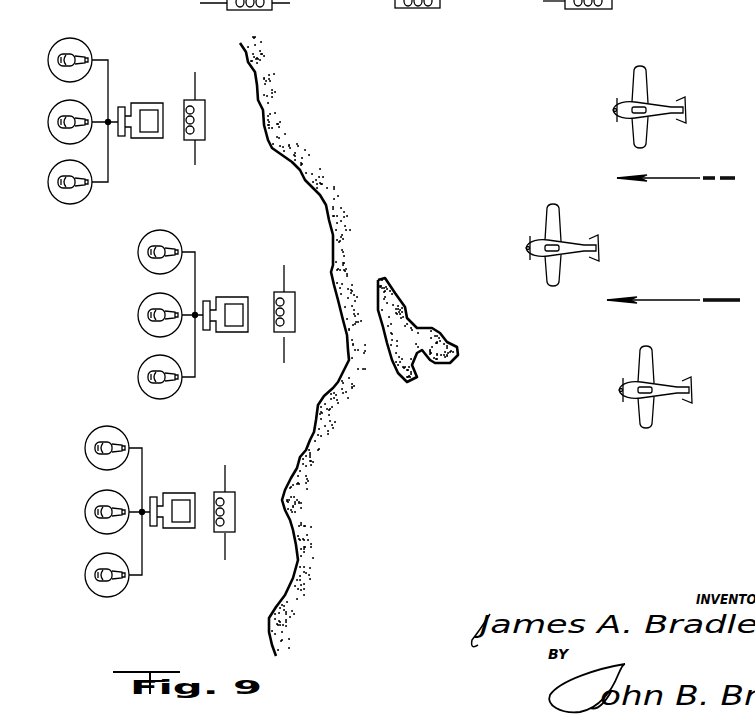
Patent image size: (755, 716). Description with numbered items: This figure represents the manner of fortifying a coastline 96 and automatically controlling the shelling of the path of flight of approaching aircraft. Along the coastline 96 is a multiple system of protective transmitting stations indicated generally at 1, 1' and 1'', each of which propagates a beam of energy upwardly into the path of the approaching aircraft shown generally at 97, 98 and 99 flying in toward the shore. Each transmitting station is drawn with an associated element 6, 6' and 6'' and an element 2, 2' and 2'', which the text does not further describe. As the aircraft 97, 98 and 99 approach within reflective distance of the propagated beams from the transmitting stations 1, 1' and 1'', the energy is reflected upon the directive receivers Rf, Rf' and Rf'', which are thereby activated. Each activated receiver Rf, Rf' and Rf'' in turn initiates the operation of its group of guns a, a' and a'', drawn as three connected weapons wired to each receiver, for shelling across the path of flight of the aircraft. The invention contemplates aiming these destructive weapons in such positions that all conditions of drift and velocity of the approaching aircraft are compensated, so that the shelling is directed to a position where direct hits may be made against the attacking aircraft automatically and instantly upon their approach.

The coastline 96 is at (313, 214).
The aircraft 97 is at (655, 90).
The aircraft 98 is at (573, 240).
The aircraft 99 is at (663, 373).
The gun a is at (83, 107).
The gun a' is at (170, 299).
The gun a'' is at (118, 503).
The receiver Rf is at (140, 108).
The receiver Rf' is at (225, 302).
The receiver Rf'' is at (172, 500).
The transmitting station 1 is at (211, 86).
The transmitting station 1' is at (299, 278).
The transmitting station 1'' is at (242, 479).
The coil 6 is at (209, 122).
The coil 6' is at (301, 313).
The coil 6'' is at (241, 512).
The ground lead 2 is at (208, 161).
The ground lead 2' is at (296, 358).
The ground lead 2'' is at (243, 556).